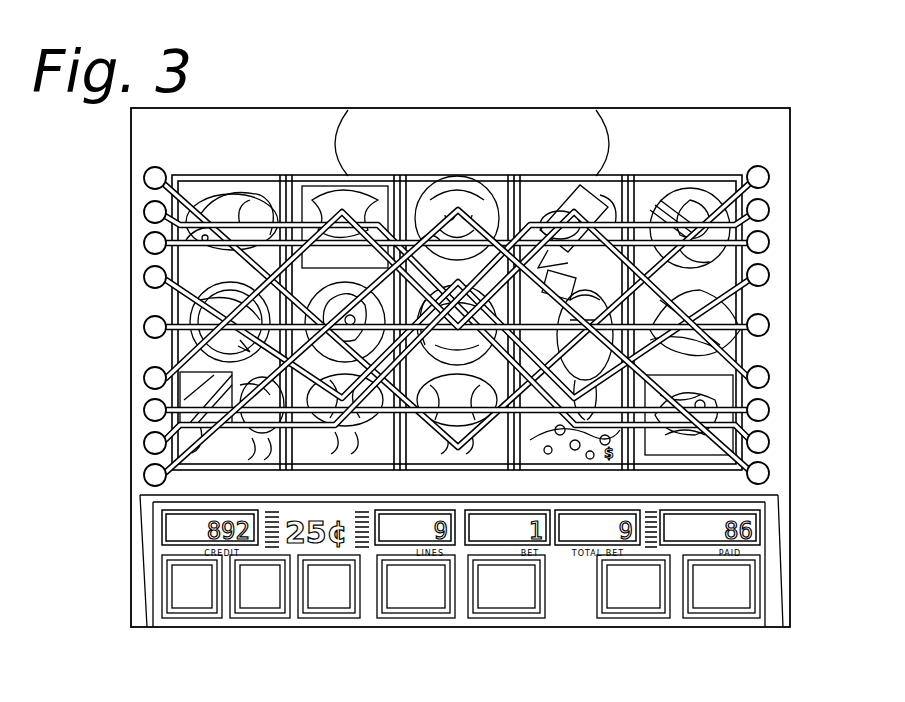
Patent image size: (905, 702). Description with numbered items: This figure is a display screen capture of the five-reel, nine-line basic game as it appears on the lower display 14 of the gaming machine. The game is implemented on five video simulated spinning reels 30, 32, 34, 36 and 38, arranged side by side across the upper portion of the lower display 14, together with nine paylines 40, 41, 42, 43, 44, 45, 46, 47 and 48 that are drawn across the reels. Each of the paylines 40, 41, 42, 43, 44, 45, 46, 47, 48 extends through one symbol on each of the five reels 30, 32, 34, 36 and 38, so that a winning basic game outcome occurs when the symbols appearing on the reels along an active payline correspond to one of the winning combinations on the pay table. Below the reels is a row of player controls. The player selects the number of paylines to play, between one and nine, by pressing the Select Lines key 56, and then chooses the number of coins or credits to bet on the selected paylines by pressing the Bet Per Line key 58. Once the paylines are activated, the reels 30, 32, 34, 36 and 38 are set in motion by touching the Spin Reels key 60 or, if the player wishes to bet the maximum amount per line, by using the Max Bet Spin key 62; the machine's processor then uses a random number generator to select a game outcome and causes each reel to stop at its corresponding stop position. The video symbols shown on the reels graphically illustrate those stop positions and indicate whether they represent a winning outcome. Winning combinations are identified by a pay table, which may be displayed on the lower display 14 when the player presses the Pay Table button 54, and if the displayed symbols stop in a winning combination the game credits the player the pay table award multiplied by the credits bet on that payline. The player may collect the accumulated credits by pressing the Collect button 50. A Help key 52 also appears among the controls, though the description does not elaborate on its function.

The lower display 14 is at (692, 183).
The video simulated spinning reel 30 is at (240, 172).
The video simulated spinning reel 32 is at (335, 140).
The video simulated spinning reel 34 is at (457, 175).
The video simulated spinning reel 36 is at (612, 172).
The video simulated spinning reel 38 is at (673, 172).
The payline 40 is at (144, 178).
The payline 41 is at (144, 212).
The payline 42 is at (144, 243).
The payline 43 is at (144, 277).
The payline 44 is at (144, 327).
The payline 45 is at (144, 378).
The payline 46 is at (144, 410).
The payline 47 is at (144, 443).
The payline 48 is at (144, 475).
The Collect button 50 is at (190, 622).
The help button 52 is at (249, 622).
The Pay Table button 54 is at (321, 622).
The Select Lines key 56 is at (419, 622).
The Bet Per Line key 58 is at (517, 622).
The Spin Reels key 60 is at (639, 622).
The Max Bet Spin key 62 is at (745, 622).